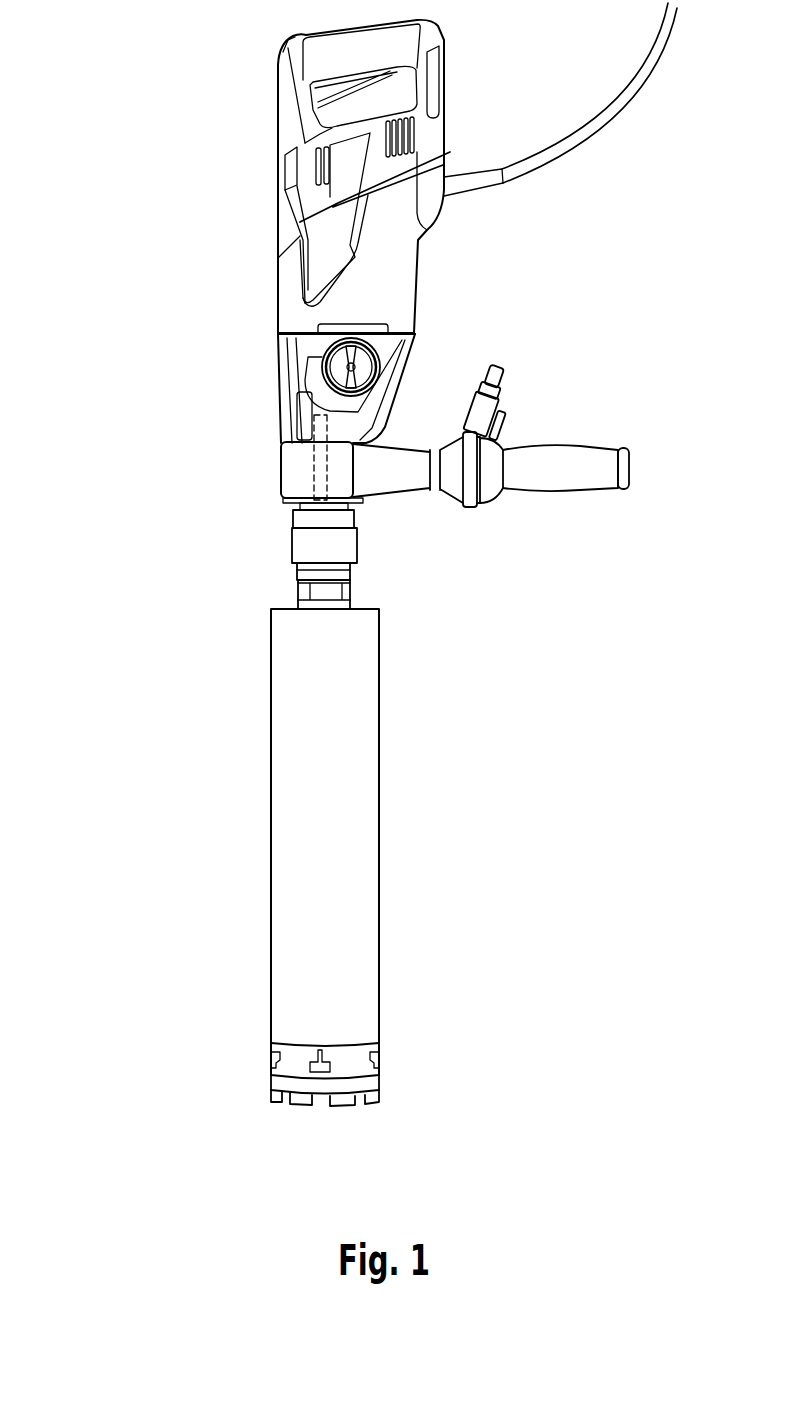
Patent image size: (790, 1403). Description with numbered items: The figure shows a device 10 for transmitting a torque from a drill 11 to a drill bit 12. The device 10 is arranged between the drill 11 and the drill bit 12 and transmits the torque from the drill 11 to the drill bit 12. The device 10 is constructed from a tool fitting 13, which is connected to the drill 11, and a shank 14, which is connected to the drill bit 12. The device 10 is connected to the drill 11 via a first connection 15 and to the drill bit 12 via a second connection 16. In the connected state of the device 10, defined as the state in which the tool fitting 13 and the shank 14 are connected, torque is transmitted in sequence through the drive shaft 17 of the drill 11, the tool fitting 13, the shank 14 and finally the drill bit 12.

The device 10 is at (512, 553).
The drill 11 is at (202, 265).
The drill bit 12 is at (202, 805).
The tool fitting 13 is at (288, 536).
The shank 14 is at (290, 588).
The first connection 15 is at (362, 503).
The second connection 16 is at (362, 578).
The drive shaft 17 is at (280, 452).